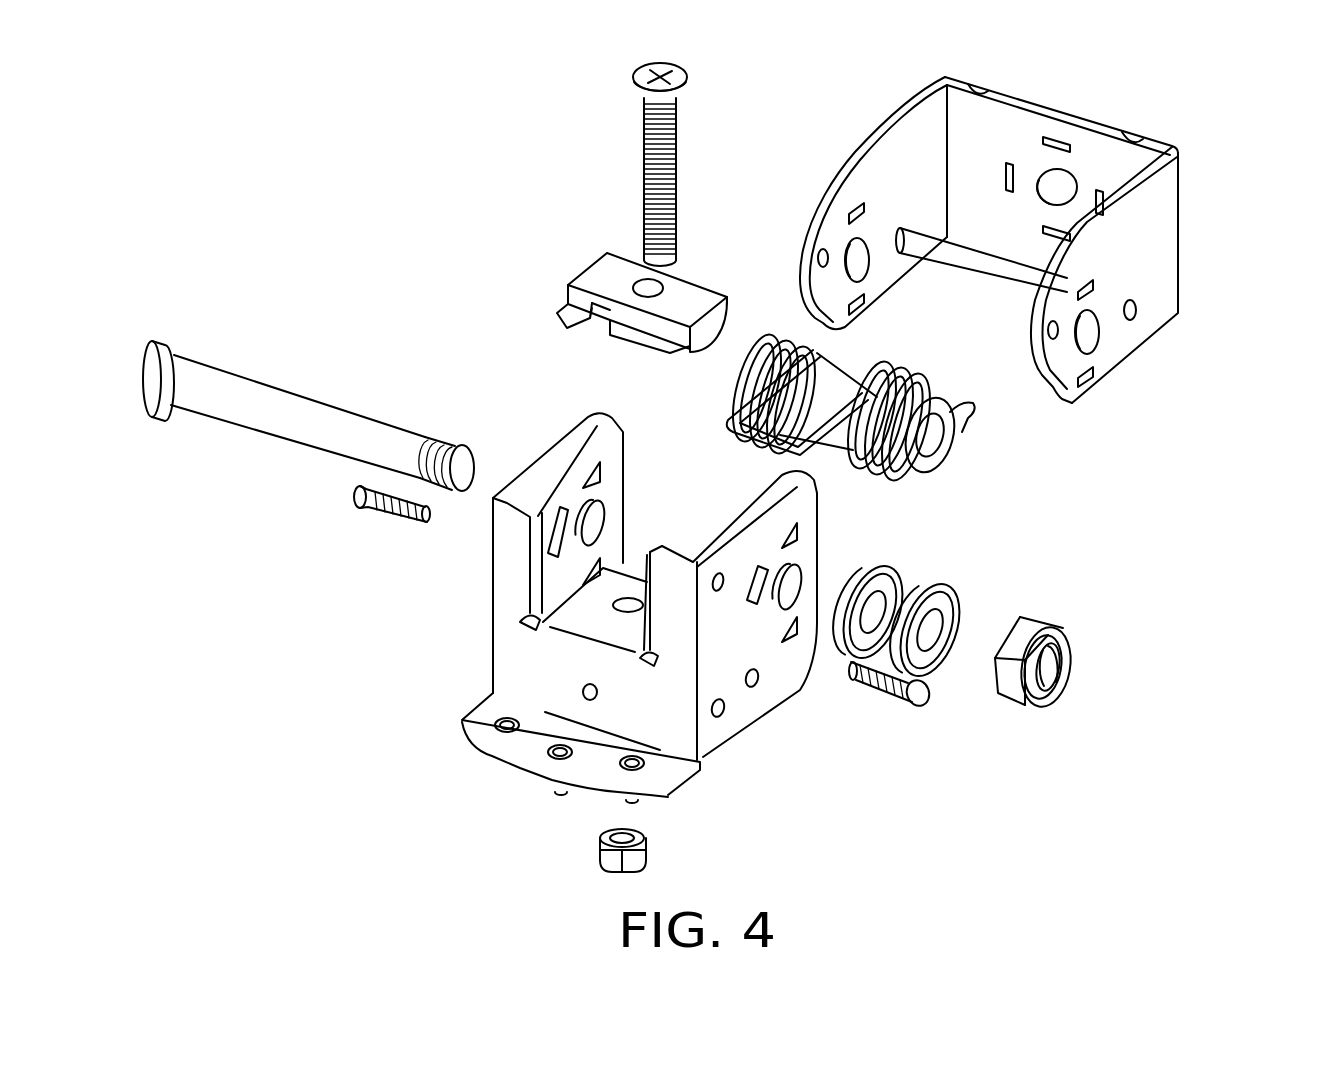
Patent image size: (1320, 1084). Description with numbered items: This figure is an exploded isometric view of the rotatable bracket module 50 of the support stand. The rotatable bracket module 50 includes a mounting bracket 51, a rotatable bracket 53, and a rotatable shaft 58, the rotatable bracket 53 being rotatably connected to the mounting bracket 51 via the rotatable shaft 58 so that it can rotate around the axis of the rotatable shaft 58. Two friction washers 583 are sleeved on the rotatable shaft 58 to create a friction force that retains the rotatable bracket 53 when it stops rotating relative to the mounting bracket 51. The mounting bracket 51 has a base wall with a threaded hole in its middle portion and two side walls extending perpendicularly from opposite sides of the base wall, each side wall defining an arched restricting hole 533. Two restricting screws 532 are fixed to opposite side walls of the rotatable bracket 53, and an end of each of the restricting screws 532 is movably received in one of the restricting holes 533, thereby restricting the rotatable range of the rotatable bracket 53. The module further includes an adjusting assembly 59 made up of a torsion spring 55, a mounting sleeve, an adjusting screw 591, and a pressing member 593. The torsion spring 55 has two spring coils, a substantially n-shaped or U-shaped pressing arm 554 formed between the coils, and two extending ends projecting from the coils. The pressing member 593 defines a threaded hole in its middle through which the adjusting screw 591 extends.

The rotatable bracket module 50 is at (1078, 104).
The rotatable bracket 53 is at (1165, 250).
The adjusting assembly 59 is at (626, 98).
The adjusting screw 591 is at (680, 128).
The pressing member 593 is at (598, 280).
The rotatable shaft 58 is at (275, 408).
The torsion spring 55 is at (930, 388).
The pressing arm 554 is at (718, 405).
The mounting bracket 51 is at (503, 613).
The restricting hole 533 is at (752, 612).
The friction washers 583 is at (883, 568).
The restricting screws 532 is at (887, 697).